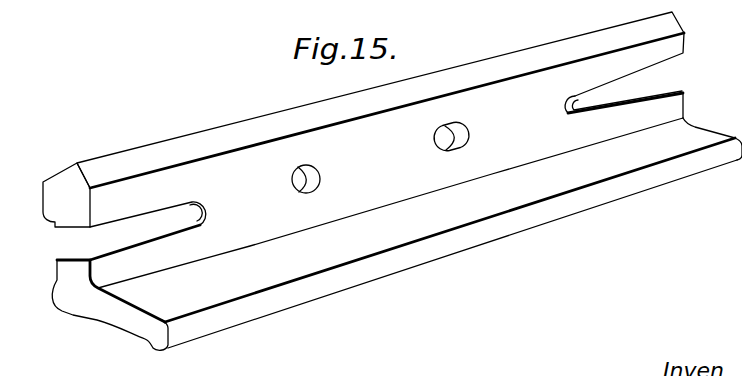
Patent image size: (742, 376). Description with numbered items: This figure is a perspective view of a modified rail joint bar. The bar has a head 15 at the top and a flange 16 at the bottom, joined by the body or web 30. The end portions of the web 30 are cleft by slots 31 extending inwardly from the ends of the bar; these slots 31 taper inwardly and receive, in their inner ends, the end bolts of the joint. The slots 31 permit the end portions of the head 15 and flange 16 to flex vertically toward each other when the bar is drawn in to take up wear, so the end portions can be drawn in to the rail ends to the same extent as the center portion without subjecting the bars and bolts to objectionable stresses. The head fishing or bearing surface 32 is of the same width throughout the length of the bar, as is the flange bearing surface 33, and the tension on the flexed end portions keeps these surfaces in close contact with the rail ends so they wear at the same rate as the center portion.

The head 15 is at (62, 183).
The flange 16 is at (175, 298).
The body or web 30 is at (248, 165).
The slots 31 is at (105, 236).
The head fishing or bearing surface 32 is at (526, 57).
The flange bearing surface 33 is at (84, 327).